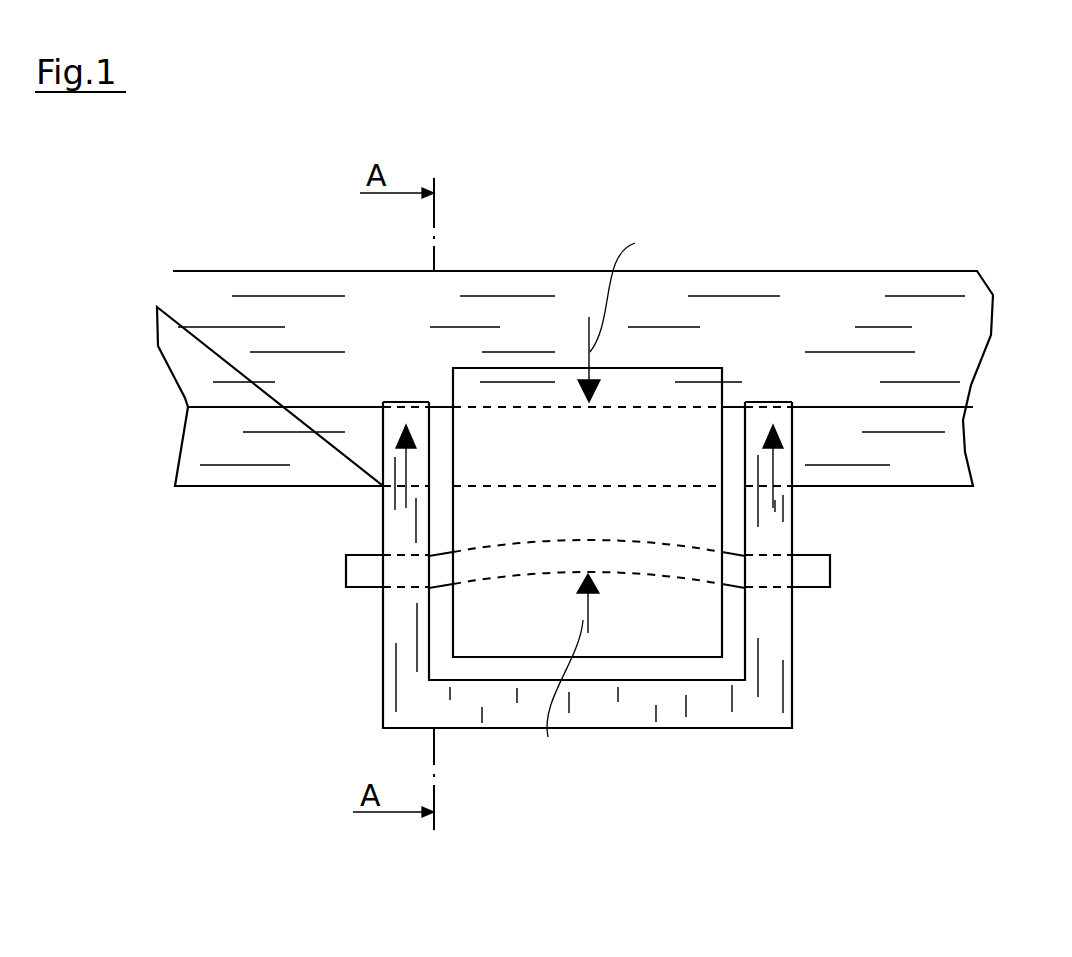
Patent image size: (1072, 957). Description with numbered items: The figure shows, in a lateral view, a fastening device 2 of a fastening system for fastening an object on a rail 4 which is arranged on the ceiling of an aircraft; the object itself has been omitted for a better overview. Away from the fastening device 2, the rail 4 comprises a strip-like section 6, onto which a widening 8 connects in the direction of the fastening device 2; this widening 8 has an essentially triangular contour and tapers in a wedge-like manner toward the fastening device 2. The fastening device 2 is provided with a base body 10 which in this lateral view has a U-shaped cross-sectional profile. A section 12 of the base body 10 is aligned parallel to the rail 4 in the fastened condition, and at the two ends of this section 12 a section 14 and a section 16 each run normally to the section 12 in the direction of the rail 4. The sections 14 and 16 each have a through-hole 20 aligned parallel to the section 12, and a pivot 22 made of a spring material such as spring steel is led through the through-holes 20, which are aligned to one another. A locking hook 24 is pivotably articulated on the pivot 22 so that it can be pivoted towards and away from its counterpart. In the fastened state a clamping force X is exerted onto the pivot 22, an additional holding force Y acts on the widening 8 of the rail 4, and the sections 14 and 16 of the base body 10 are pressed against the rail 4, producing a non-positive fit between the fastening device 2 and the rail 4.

The fastening device 2 is at (595, 526).
The rail 4 is at (599, 329).
The strip-like section 6 is at (842, 320).
The widening 8 is at (937, 448).
The base body 10 is at (538, 617).
The section 12 is at (600, 707).
The section 14 is at (393, 515).
The section 16 is at (770, 530).
The through-hole 20 is at (405, 583).
The pivot 22 is at (820, 572).
The locking hook 24 is at (707, 643).